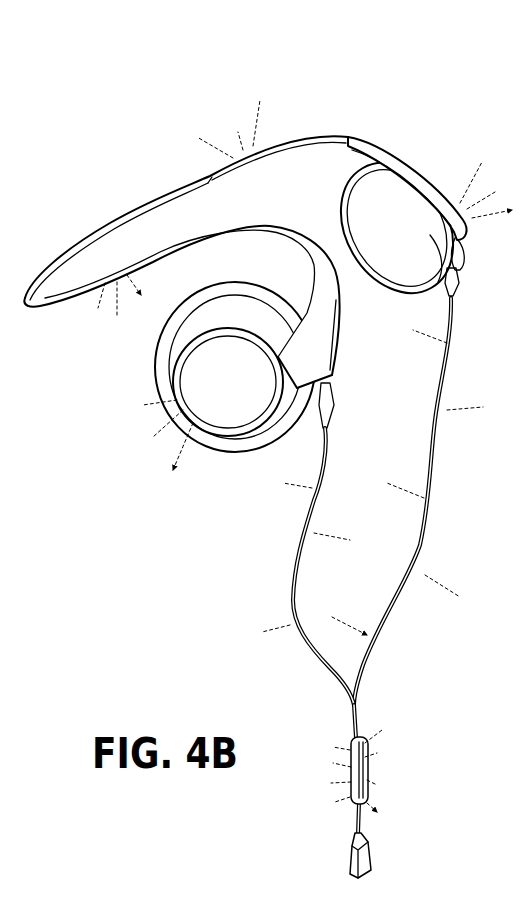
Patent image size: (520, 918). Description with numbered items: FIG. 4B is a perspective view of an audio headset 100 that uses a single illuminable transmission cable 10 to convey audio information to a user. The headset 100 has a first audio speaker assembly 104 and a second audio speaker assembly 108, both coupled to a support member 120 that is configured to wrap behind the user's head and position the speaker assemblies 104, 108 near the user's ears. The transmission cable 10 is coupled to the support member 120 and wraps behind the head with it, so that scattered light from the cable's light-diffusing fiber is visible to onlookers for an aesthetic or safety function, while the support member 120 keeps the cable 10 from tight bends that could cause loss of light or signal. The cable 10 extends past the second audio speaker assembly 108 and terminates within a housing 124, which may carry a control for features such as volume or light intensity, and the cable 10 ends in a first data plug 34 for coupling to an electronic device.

The headset 100 is at (466, 102).
The second audio speaker assembly 108 is at (427, 166).
The support member 120 is at (49, 262).
The transmission cable 10 is at (55, 300).
The first audio speaker assembly 104 is at (273, 455).
The housing 124 is at (359, 752).
The first data plug 34 is at (366, 860).